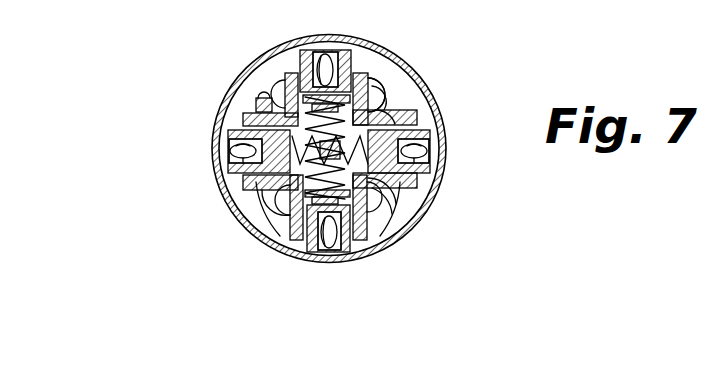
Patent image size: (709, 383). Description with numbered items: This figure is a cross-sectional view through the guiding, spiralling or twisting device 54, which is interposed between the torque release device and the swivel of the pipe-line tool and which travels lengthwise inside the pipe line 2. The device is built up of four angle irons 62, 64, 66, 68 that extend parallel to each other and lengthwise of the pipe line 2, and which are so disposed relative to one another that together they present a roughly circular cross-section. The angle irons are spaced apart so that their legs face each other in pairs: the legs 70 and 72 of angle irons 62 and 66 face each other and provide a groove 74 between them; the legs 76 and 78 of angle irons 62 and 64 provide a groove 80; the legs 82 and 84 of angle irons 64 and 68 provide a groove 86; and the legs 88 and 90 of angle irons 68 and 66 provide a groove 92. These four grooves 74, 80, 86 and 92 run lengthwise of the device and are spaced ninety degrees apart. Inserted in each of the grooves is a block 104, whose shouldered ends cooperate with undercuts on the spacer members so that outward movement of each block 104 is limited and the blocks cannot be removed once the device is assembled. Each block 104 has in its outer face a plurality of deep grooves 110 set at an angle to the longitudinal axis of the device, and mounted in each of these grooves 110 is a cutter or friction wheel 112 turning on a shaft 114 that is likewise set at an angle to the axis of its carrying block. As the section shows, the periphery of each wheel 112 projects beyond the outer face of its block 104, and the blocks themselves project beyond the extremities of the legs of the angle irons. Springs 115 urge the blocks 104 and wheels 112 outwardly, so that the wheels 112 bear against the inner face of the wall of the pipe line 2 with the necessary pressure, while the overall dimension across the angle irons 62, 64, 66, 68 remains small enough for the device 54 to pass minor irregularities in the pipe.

The pipe line 2 is at (408, 70).
The guiding, spiralling or twisting device 54 is at (392, 210).
The angle iron 62 is at (262, 110).
The angle iron 64 is at (262, 212).
The angle iron 66 is at (380, 98).
The angle iron 68 is at (400, 228).
The leg 70 is at (286, 96).
The leg 72 is at (357, 72).
The groove 74 is at (292, 112).
The leg 76 is at (243, 119).
The leg 78 is at (243, 188).
The groove 80 is at (240, 180).
The leg 82 is at (298, 242).
The leg 84 is at (362, 235).
The groove 86 is at (312, 252).
The leg 88 is at (408, 194).
The leg 90 is at (413, 118).
The groove 92 is at (432, 125).
The block 104 is at (360, 82).
The grooves 110 is at (309, 55).
The cutter or friction wheel 112 is at (341, 50).
The shaft 114 is at (325, 48).
The springs 115 is at (400, 205).